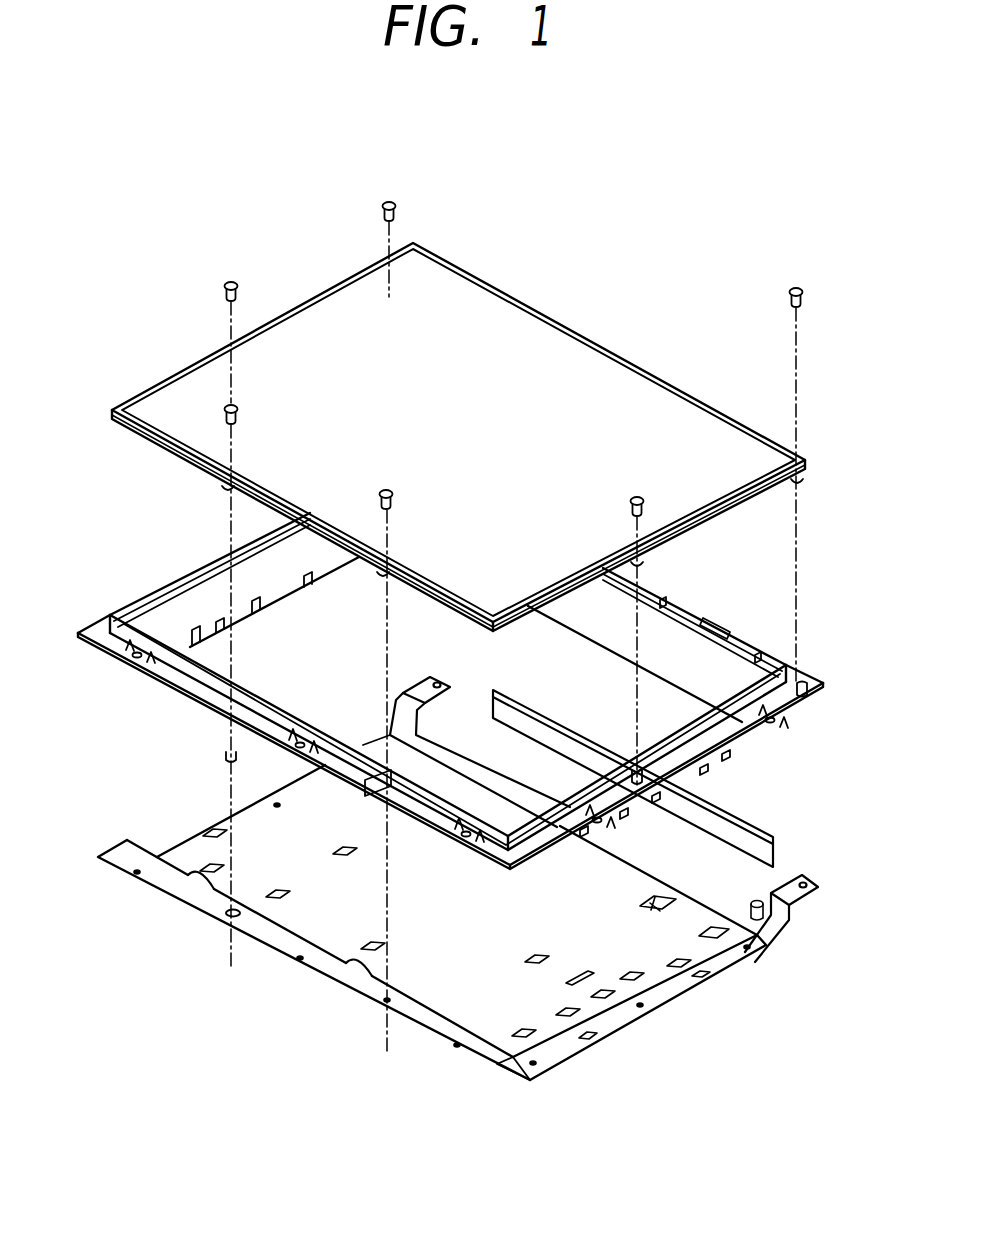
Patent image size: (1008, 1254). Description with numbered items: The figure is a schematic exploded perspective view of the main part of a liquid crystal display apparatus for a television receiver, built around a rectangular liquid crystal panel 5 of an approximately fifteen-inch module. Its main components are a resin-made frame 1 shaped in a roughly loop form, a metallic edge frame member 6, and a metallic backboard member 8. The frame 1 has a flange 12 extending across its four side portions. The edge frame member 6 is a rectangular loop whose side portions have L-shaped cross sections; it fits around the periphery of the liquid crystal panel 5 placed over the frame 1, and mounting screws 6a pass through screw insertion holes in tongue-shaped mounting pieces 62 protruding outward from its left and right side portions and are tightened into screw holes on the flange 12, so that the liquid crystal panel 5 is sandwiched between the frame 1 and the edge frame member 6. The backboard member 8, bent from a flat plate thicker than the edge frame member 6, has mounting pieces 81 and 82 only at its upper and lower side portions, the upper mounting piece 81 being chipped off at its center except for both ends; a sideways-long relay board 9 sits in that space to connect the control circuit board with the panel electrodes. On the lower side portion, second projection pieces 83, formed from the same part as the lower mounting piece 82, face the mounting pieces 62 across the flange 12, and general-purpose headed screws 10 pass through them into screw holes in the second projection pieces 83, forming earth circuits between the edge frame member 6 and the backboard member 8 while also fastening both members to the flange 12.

The frame 1 is at (113, 590).
The liquid crystal panel 5 is at (543, 358).
The edge frame member 6 is at (435, 437).
The mounting screw 6a is at (226, 280).
The backboard member 8 is at (422, 911).
The relay board 9 is at (758, 822).
The screw 10 is at (237, 406).
The flange 12 is at (764, 738).
The mounting piece 62 is at (222, 489).
The mounting piece 81 is at (436, 678).
The mounting piece 82 is at (271, 948).
The second projection piece 83 is at (210, 920).